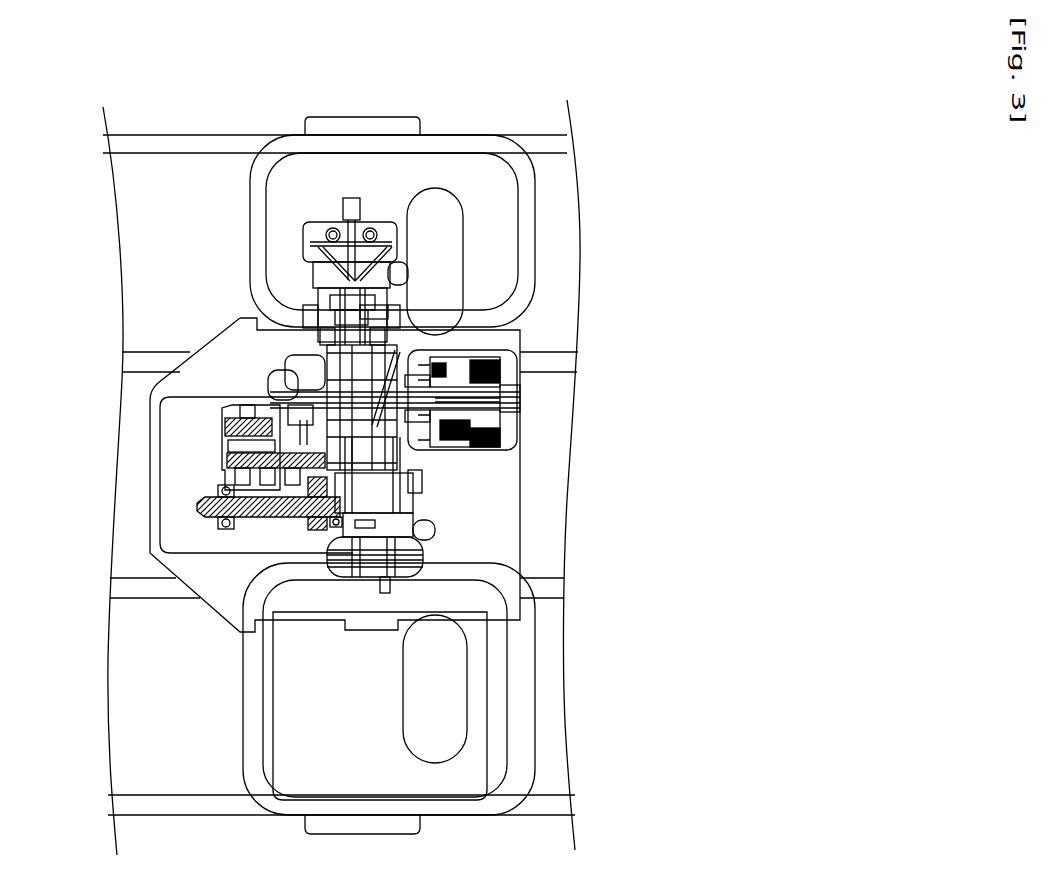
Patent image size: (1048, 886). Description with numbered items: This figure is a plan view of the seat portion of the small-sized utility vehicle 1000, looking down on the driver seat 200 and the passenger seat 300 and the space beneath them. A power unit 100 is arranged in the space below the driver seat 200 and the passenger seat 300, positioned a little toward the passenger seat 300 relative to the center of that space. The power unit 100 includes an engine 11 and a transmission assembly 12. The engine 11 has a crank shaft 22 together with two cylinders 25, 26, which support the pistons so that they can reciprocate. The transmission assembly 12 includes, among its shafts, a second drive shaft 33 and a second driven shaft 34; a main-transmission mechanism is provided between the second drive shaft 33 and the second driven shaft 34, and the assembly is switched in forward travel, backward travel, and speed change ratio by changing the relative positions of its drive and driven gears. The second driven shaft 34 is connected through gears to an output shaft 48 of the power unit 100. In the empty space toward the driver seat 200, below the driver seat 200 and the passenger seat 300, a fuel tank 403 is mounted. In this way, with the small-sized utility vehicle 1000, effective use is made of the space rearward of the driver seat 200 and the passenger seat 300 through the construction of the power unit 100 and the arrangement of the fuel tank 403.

The small-sized utility vehicle 1000 is at (485, 117).
The passenger seat 300 is at (312, 167).
The driver seat 200 is at (252, 762).
The fuel tank 403 is at (468, 757).
The power unit 100 is at (293, 263).
The engine 11 is at (392, 344).
The transmission assembly 12 is at (213, 413).
The crank shaft 22 is at (280, 393).
The cylinder 25 is at (378, 312).
The cylinder 26 is at (400, 490).
The second drive shaft 33 is at (222, 425).
The second driven shaft 34 is at (222, 462).
The output shaft 48 is at (250, 510).